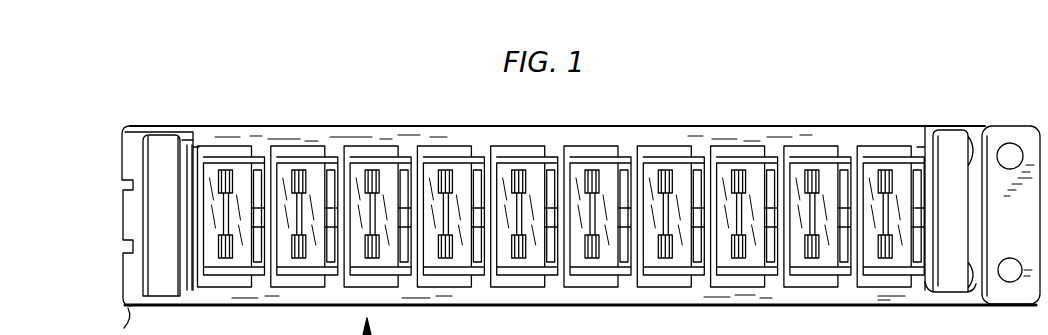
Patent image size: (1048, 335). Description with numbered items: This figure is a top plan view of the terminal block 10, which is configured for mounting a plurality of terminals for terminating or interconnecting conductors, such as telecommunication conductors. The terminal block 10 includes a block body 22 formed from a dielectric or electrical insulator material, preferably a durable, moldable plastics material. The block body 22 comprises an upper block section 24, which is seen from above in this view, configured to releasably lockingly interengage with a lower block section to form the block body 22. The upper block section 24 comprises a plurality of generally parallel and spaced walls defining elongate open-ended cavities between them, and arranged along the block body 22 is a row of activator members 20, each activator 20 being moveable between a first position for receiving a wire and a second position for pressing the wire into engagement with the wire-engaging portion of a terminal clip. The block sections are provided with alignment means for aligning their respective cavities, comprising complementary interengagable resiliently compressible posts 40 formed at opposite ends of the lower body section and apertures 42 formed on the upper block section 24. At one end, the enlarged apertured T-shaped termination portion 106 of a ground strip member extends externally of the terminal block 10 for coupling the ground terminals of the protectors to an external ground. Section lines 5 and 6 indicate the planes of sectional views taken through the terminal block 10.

The terminal block 10 is at (467, 99).
The activator member 20 is at (797, 168).
The block body 22 is at (370, 135).
The upper block section 24 is at (745, 290).
The resiliently compressible post 40 is at (988, 128).
The aperture 42 is at (965, 130).
The T-shaped termination portion 106 is at (1002, 292).
The section line 5- 5 is at (165, 252).
The section line 6- 6 is at (297, 115).